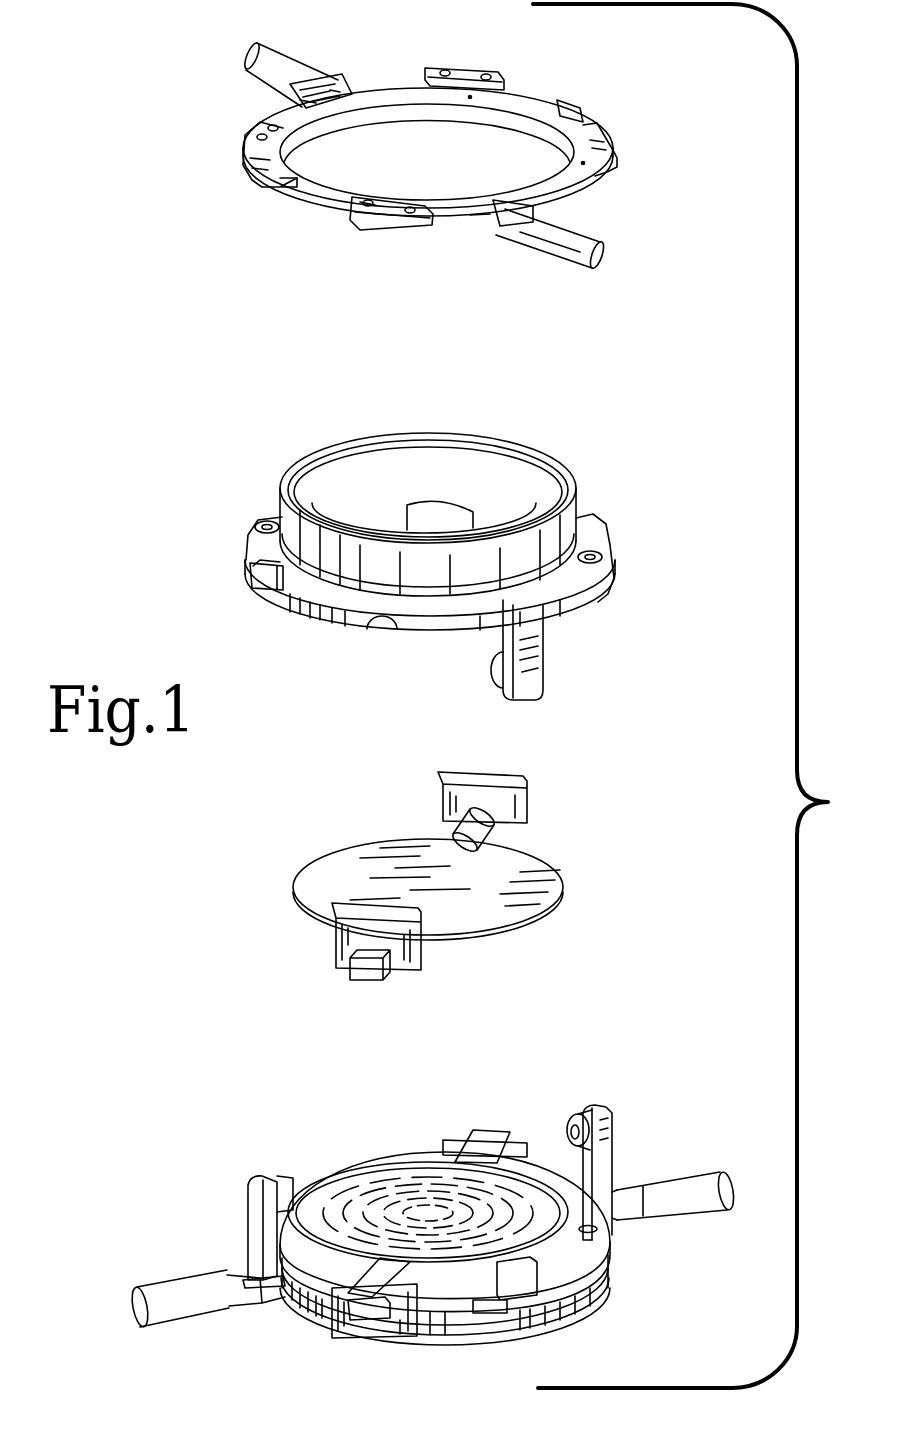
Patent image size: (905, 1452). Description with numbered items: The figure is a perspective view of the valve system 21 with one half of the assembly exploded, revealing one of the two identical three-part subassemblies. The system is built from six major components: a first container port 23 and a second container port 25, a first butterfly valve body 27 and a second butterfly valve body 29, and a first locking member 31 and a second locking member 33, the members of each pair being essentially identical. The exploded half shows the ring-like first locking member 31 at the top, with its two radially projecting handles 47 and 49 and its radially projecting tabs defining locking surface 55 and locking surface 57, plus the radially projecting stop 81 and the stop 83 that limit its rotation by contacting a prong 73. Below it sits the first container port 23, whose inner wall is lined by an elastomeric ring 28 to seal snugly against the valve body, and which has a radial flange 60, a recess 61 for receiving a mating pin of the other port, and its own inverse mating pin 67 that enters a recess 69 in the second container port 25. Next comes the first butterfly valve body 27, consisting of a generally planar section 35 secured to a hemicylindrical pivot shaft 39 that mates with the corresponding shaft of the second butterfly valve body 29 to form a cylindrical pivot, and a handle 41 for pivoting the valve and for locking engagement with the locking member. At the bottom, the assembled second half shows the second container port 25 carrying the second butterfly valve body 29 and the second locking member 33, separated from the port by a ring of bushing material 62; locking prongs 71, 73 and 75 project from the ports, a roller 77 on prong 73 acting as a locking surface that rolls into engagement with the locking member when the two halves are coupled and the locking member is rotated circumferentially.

The valve system 21 is at (695, 696).
The first container port 23 is at (215, 565).
The second container port 25 is at (473, 1327).
The first butterfly valve body 27 is at (240, 890).
The elastomeric ring 28 is at (412, 517).
The second butterfly valve body 29 is at (458, 1201).
The first locking member 31 is at (215, 156).
The second locking member 33 is at (293, 1310).
The planar section 35 is at (484, 889).
The pivot shaft 39 is at (490, 828).
The handle 41 is at (343, 953).
The handle 47 is at (593, 233).
The handle 49 is at (272, 45).
The locking surface 55 is at (382, 217).
The locking surface 57 is at (473, 68).
The radial flange 60 is at (452, 626).
The recess 61 is at (268, 520).
The ring of bushing material 62 is at (268, 190).
The mating pin 67 is at (592, 596).
The recess 69 is at (602, 1203).
The locking prong 71 is at (253, 1200).
The locking prong 73 is at (613, 1158).
The locking prong 75 is at (543, 702).
The roller 77 is at (577, 1114).
The stop 81 is at (571, 100).
The stop 83 is at (613, 163).